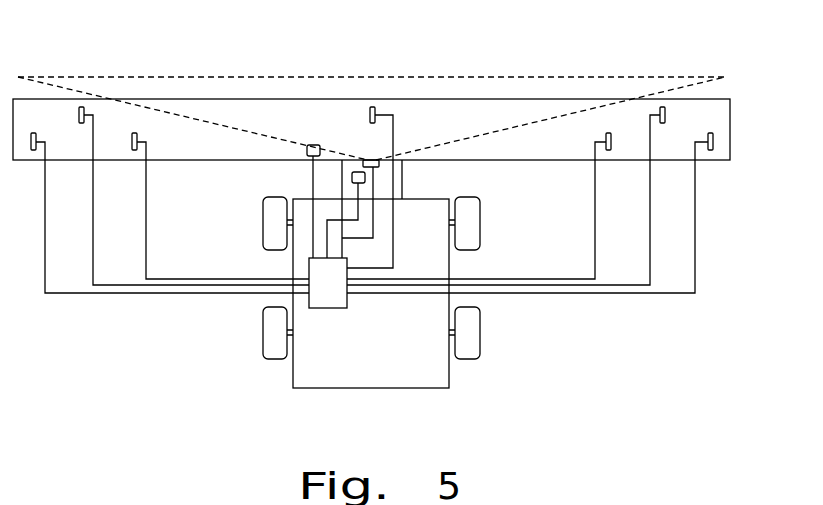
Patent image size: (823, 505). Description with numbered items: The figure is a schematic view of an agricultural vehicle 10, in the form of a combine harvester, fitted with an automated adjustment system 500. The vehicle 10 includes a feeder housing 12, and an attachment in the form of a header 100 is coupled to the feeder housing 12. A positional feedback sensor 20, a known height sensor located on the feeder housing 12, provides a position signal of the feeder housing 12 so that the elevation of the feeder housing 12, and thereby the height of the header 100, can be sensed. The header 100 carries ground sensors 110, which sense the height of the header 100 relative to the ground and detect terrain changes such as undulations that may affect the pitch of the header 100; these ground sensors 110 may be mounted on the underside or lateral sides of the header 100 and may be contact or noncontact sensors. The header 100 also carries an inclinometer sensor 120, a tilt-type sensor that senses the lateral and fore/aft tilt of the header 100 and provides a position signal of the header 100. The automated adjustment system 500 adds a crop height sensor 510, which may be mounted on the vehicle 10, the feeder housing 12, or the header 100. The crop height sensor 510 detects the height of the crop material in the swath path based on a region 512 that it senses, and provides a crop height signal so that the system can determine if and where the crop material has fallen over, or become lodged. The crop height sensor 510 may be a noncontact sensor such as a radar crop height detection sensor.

The agricultural vehicle 10 is at (427, 388).
The feeder housing 12 is at (402, 175).
The positional feedback sensor 20 is at (352, 172).
The header 100 is at (730, 122).
The ground sensors 110 is at (134, 133).
The inclinometer sensor 120 is at (307, 150).
The automated adjustment system 500 is at (332, 302).
The crop height sensor 510 is at (363, 160).
The region 512 is at (483, 77).